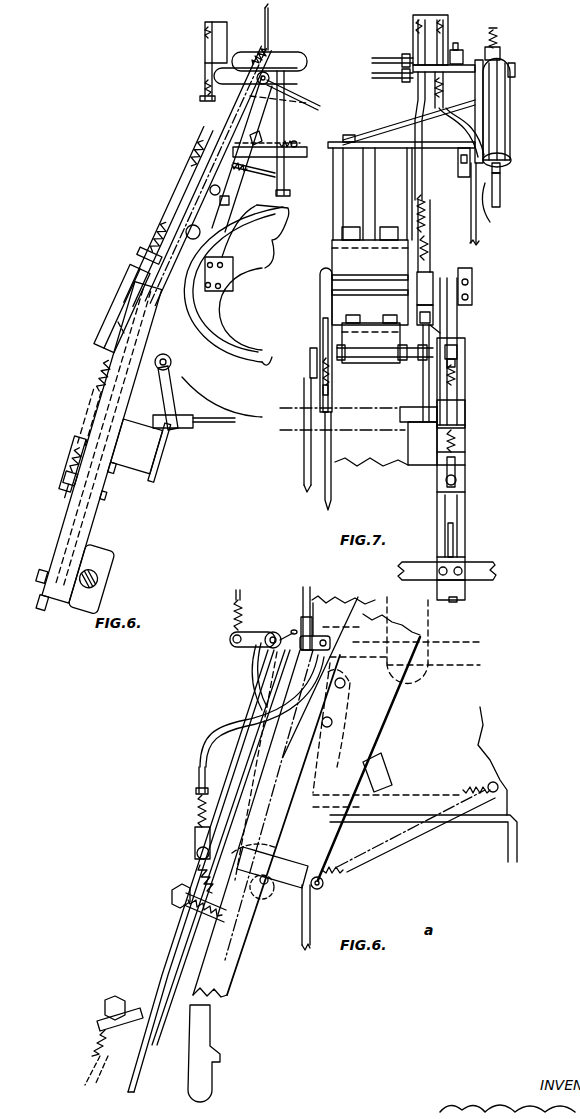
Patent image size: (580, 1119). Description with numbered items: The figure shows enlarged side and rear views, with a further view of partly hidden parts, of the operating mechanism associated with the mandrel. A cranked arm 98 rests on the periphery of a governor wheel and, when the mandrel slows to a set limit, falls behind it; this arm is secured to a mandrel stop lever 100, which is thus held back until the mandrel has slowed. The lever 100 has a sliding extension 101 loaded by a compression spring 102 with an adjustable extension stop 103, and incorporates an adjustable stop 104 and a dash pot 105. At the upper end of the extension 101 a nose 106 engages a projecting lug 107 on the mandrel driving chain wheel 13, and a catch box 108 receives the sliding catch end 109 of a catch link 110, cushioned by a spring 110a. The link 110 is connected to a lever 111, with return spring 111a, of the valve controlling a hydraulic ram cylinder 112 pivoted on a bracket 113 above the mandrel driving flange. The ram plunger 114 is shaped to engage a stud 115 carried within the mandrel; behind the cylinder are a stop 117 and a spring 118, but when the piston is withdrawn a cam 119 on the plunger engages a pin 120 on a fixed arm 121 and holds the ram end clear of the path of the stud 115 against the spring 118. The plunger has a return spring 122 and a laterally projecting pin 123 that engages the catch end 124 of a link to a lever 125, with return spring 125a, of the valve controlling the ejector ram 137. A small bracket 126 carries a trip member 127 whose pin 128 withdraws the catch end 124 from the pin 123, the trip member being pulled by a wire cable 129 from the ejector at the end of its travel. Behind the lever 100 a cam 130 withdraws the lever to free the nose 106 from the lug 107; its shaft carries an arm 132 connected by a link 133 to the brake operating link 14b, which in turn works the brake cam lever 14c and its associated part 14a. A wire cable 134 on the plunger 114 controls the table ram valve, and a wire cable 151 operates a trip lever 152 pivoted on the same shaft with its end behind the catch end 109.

In FIG. 6, the mandrel driving chain wheel 13 is at (242, 358).
In FIG. 7, the lever slot 14a is at (333, 380).
In FIG. 7, the brake operating link 14b is at (333, 482).
In FIG. 7, the brake cam lever 14c is at (320, 307).
In FIG. 7, the cranked arm 98 is at (405, 432).
In FIG. 6, the mandrel stop lever 100 is at (95, 518).
In FIG. 7, the mandrel stop lever 100 is at (467, 482).
In FIG. 6, the sliding extension 101 is at (120, 357).
In FIG. 7, the sliding extension 101 is at (462, 328).
In FIG. 6, the compression spring 102 is at (85, 395).
In FIG. 7, the compression spring 102 is at (456, 376).
In FIG. 6, the adjustable extension stop 103 is at (55, 480).
In FIG. 7, the adjustable extension stop 103 is at (445, 478).
In FIG. 6, the adjustable stop 104 is at (44, 604).
In FIG. 7, the adjustable stop 104 is at (458, 600).
In FIG. 6, the dash pot 105 is at (150, 455).
In FIG. 6, the nose 106 is at (212, 290).
In FIG. 7, the nose 106 is at (473, 270).
In FIG. 6, the projecting lug 107 is at (222, 264).
In FIG. 6, the catch box 108 is at (145, 282).
In FIG. 7, the catch box 108 is at (433, 272).
In FIG. 6, the catch end 109 is at (117, 322).
In FIG. 7, the catch end 109 is at (434, 328).
In FIG. 6, the catch link 110 is at (175, 198).
In FIG. 7, the catch link 110 is at (417, 196).
In FIG. 6A, the catch link 110 is at (182, 920).
In FIG. 6, the cushion spring 110a is at (150, 232).
In FIG. 7, the cushion spring 110a is at (417, 247).
In FIG. 6A, the cushion spring 110a is at (100, 1018).
In FIG. 7, the lever 111 is at (415, 105).
In FIG. 7, the return spring 111a is at (413, 33).
In FIG. 6, the hydraulic ram cylinder 112 is at (290, 98).
In FIG. 7, the hydraulic ram cylinder 112 is at (511, 85).
In FIG. 6A, the hydraulic ram cylinder 112 is at (382, 720).
In FIG. 7, the bracket 113 is at (486, 54).
In FIG. 6, the ram plunger 114 is at (187, 177).
In FIG. 7, the ram plunger 114 is at (501, 195).
In FIG. 6A, the ram plunger 114 is at (242, 975).
In FIG. 6, the stud 115 is at (200, 230).
In FIG. 6, the stop 117 is at (262, 134).
In FIG. 6A, the stop 117 is at (388, 762).
In FIG. 6, the spring 118 is at (288, 140).
In FIG. 6A, the spring 118 is at (412, 843).
In FIG. 6, the cam 119 is at (229, 203).
In FIG. 7, the cam 119 is at (501, 168).
In FIG. 6A, the cam 119 is at (330, 884).
In FIG. 6, the pin 120 is at (221, 189).
In FIG. 6A, the pin 120 is at (266, 900).
In FIG. 6, the fixed arm 121 is at (220, 132).
In FIG. 7, the fixed arm 121 is at (484, 112).
In FIG. 6A, the fixed arm 121 is at (338, 740).
In FIG. 6, the return spring 122 is at (256, 44).
In FIG. 7, the return spring 122 is at (499, 38).
In FIG. 6A, the return spring 122 is at (336, 593).
In FIG. 7, the laterally projecting pin 123 is at (500, 207).
In FIG. 6A, the laterally projecting pin 123 is at (323, 917).
In FIG. 7, the catch end 124 is at (480, 240).
In FIG. 6A, the catch end 124 is at (220, 1055).
In FIG. 6, the lever 125 is at (202, 101).
In FIG. 7, the lever 125 is at (440, 108).
In FIG. 6A, the lever 125 is at (242, 652).
In FIG. 6, the return spring 125a is at (204, 40).
In FIG. 7, the return spring 125a is at (446, 30).
In FIG. 6A, the return spring 125a is at (243, 600).
In FIG. 7, the small bracket 126 is at (457, 146).
In FIG. 6A, the small bracket 126 is at (198, 777).
In FIG. 7, the trip member 127 is at (457, 165).
In FIG. 6A, the trip member 127 is at (193, 855).
In FIG. 7, the pin 128 is at (500, 155).
In FIG. 6A, the pin 128 is at (270, 855).
In FIG. 6A, the wire cable 129 is at (303, 590).
In FIG. 6, the cam 130 is at (171, 360).
In FIG. 7, the cam 130 is at (462, 342).
In FIG. 7, the arm 132 is at (309, 364).
In FIG. 7, the link 133 is at (304, 458).
In FIG. 6A, the wire cable 134 is at (160, 1030).
In FIG. 7, the ejector ram 137 is at (378, 350).
In FIG. 6, the wire cable 151 is at (212, 425).
In FIG. 7, the wire cable 151 is at (400, 417).
In FIG. 6, the trip lever 152 is at (180, 400).
In FIG. 7, the trip lever 152 is at (422, 382).